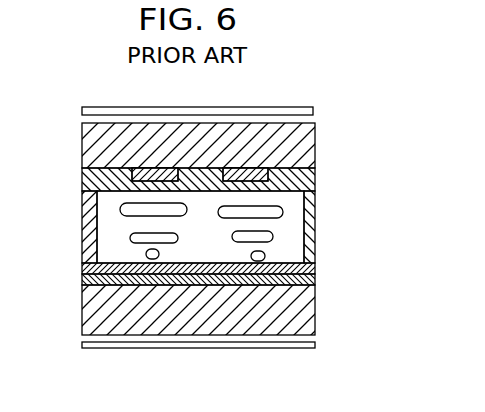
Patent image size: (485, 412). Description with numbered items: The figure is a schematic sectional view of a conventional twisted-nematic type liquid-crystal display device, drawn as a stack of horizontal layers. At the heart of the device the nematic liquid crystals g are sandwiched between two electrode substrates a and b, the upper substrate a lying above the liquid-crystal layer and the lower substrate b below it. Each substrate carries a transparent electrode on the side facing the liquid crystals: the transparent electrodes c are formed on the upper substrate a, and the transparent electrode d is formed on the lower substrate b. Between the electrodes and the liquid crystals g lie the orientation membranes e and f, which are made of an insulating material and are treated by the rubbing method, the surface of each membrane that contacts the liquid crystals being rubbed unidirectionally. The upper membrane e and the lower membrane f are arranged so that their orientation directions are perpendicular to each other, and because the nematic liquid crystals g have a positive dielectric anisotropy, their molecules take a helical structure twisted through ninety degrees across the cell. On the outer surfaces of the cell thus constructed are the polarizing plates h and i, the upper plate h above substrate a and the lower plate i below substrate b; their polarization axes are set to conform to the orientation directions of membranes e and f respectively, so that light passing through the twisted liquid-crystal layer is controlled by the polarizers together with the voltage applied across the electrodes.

The polarizing plate h is at (313, 110).
The electrode substrate a is at (312, 139).
The transparent electrode c is at (308, 178).
The orientation membrane e is at (307, 186).
The nematic liquid crystals g is at (295, 218).
The orientation membrane f is at (310, 269).
The transparent electrode d is at (315, 282).
The electrode substrate b is at (312, 318).
The polarizing plate i is at (315, 345).